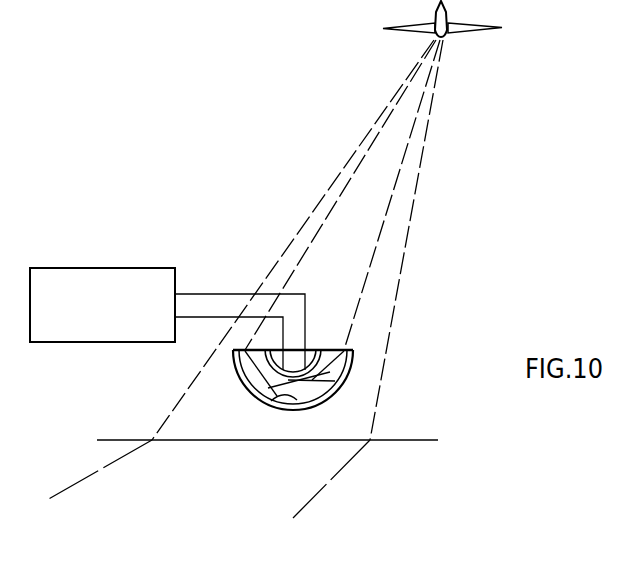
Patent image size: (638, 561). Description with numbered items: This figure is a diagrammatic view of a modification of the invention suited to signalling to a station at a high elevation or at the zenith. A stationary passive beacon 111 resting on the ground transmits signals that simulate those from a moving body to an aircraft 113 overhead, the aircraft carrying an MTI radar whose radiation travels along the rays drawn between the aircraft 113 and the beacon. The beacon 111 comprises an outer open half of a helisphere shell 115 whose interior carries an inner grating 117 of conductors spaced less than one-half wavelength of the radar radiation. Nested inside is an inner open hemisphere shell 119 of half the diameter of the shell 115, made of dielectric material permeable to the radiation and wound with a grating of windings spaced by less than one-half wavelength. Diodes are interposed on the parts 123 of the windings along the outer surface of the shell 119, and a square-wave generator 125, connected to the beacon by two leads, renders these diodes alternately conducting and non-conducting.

The aircraft 113 is at (481, 18).
The square-wave generator 125 is at (145, 268).
The stationary passive beacon 111 is at (358, 434).
The outer open half of a helisphere shell 115 is at (317, 410).
The inner open hemisphere shell 119 is at (310, 350).
The parts of the windings along the outer surface 123 is at (268, 373).
The inner grating of conductors 117 is at (270, 401).